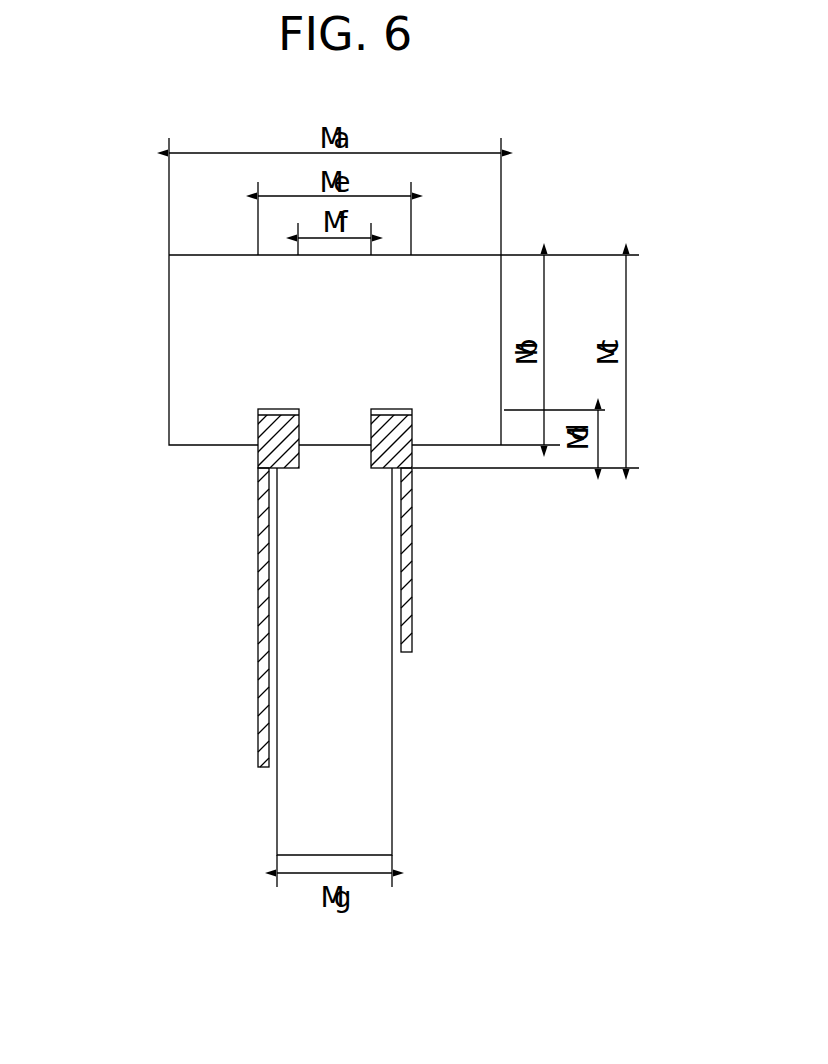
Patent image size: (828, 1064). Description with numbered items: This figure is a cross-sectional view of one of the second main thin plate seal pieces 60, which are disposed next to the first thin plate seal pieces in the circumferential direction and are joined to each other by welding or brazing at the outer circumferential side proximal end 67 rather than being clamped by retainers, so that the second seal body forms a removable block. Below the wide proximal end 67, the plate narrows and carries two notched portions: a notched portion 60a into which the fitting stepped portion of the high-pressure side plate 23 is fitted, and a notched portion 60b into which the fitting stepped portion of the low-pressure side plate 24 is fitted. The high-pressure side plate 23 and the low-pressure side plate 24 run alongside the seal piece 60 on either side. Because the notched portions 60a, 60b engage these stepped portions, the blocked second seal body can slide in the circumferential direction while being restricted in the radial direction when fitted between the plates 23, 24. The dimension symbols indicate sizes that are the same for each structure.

The outer circumferential side proximal end 67 is at (184, 343).
The notched portion 60a is at (296, 450).
The notched portion 60b is at (372, 450).
The high-pressure side plate 23 is at (258, 559).
The low-pressure side plate 24 is at (413, 535).
The second main thin plate seal piece 60 is at (292, 818).